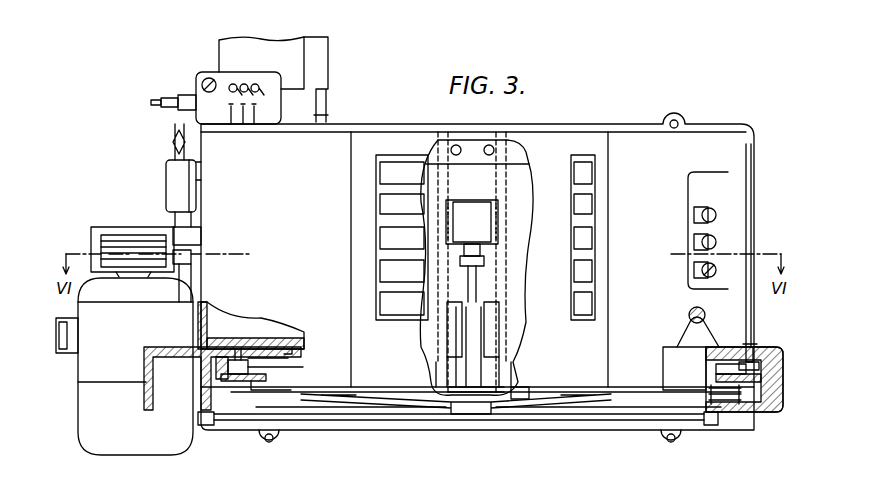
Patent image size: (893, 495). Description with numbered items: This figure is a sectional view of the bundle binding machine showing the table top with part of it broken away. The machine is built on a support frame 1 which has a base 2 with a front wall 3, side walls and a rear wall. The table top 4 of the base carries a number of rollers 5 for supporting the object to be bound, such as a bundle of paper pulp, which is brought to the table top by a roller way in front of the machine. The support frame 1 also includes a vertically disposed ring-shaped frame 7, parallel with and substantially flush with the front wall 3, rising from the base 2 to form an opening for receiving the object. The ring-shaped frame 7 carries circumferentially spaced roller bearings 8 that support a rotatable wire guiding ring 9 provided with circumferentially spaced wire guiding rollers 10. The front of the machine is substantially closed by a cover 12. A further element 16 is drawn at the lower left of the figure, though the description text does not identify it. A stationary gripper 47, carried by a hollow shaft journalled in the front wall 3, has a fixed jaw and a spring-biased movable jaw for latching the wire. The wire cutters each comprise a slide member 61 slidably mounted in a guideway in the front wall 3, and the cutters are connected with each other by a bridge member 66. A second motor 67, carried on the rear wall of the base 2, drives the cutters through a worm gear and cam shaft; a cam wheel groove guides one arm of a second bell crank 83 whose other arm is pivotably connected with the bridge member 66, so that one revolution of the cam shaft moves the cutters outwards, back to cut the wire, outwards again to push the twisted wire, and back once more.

The support frame 1 is at (718, 124).
The base 2 is at (620, 430).
The front wall 3 is at (297, 351).
The table top 4 is at (493, 263).
The rollers 5 is at (398, 162).
The ring-shaped frame 7 is at (774, 410).
The roller bearings 8 is at (742, 352).
The wire guiding ring 9 is at (750, 382).
The wire guiding rollers 10 is at (738, 400).
The cover 12 is at (576, 408).
The fuel tank 16 is at (158, 442).
The stationary gripper 47 is at (522, 400).
The slide member 61 is at (440, 325).
The bridge member 66 is at (455, 218).
The second motor 67 is at (225, 54).
The second bell crank 83 is at (472, 300).